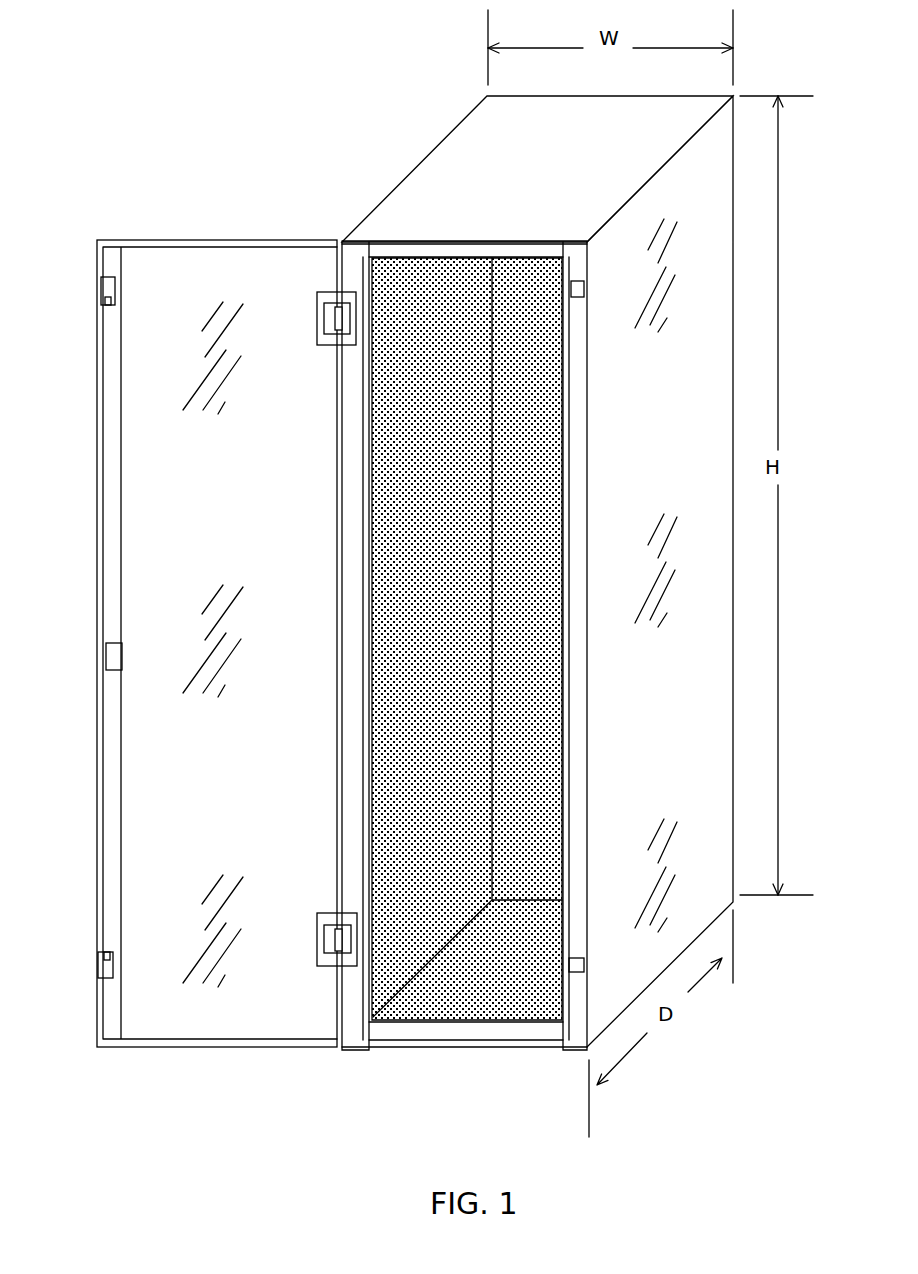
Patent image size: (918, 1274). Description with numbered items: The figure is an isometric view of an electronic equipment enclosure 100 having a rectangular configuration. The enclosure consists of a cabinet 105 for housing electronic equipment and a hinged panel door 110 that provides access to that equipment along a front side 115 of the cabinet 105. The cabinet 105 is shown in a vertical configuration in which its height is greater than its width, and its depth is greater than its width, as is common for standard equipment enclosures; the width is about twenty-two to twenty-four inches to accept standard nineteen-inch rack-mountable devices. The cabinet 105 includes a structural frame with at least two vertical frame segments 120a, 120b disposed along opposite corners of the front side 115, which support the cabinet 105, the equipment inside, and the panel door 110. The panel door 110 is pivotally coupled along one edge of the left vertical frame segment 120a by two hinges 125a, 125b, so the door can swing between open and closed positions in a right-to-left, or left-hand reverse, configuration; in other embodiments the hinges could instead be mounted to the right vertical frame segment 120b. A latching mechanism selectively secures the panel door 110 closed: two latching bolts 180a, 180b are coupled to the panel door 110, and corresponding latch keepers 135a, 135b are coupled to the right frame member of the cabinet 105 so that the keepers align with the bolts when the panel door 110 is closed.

The electronic equipment enclosure 100 is at (175, 90).
The cabinet 105 is at (432, 151).
The hinged panel door 110 is at (230, 240).
The front side 115 is at (453, 1040).
The left vertical frame segment 120a is at (350, 1052).
The right vertical frame segment 120b is at (577, 1052).
The hinge 125a is at (317, 338).
The hinge 125b is at (316, 932).
The latch keeper 135a is at (584, 290).
The latch keeper 135b is at (584, 958).
The latching bolt 180a is at (100, 290).
The latching bolt 180b is at (98, 968).